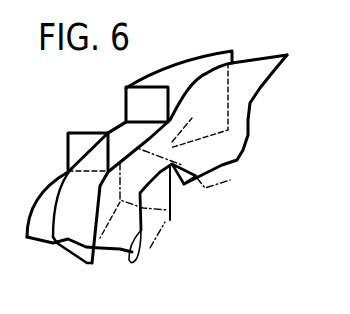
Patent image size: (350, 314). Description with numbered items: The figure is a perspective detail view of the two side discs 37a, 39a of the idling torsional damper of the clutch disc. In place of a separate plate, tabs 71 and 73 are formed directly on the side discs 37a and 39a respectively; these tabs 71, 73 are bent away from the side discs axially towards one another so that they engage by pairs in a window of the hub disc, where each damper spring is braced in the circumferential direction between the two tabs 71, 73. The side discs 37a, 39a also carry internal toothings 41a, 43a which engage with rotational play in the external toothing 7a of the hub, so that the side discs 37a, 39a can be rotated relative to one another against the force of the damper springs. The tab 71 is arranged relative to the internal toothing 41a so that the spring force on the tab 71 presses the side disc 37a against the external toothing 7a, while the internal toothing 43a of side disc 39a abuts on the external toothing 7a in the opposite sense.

The external toothing 7a is at (168, 222).
The side disc 37a is at (57, 244).
The side disc 39a is at (46, 195).
The internal toothing 41a is at (129, 248).
The internal toothing 43a is at (199, 105).
The tab 71 is at (83, 147).
The tab 73 is at (153, 97).